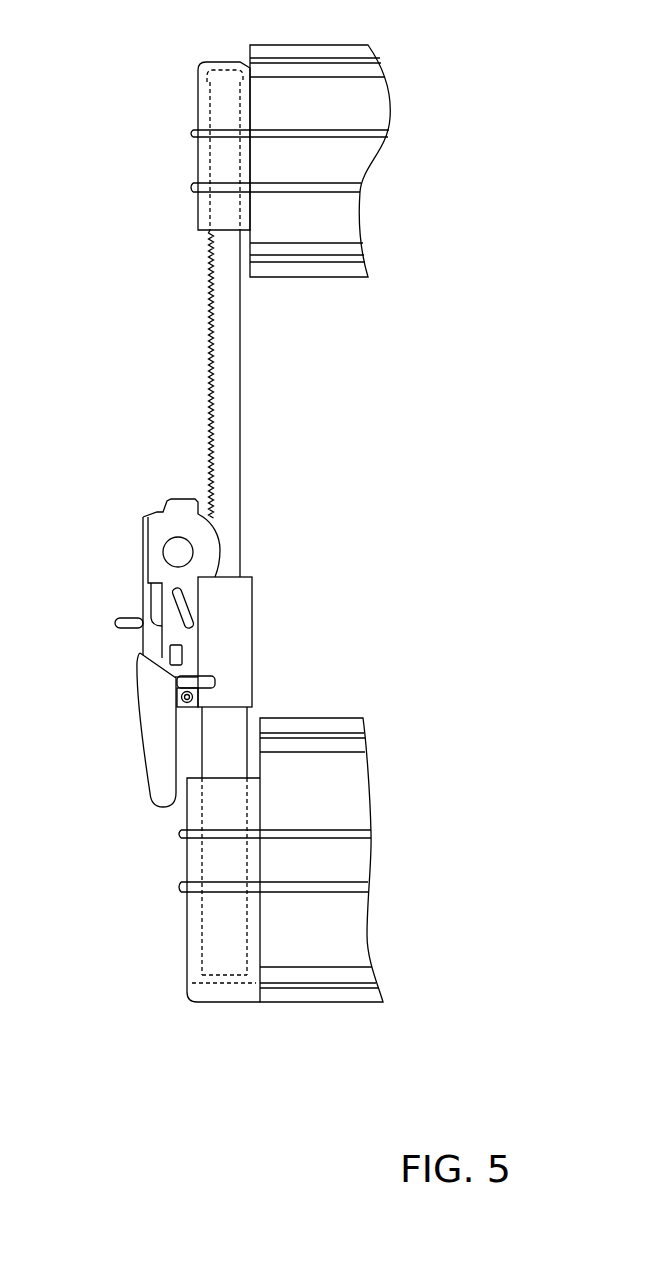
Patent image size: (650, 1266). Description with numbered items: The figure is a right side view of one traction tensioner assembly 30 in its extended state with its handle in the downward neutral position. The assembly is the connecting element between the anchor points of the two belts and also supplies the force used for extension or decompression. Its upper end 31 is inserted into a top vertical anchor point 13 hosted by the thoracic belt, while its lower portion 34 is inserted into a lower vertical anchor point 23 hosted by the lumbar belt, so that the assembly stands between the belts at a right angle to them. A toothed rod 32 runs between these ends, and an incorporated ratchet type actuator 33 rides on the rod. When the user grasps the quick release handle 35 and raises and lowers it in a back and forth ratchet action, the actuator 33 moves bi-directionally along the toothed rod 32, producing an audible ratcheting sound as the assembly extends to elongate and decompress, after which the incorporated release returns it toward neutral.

The top vertical anchor point 13 is at (222, 60).
The lower vertical anchor point 23 is at (192, 983).
The traction tensioner assembly 30 is at (135, 502).
The upper end 31 is at (215, 160).
The toothed rod 32 is at (222, 380).
The actuator 33 is at (200, 625).
The lower portion of traction tensioner assembly 34 is at (205, 918).
The actuator handle 35 is at (137, 733).